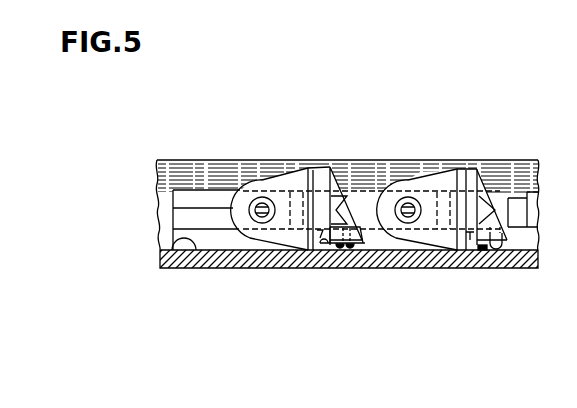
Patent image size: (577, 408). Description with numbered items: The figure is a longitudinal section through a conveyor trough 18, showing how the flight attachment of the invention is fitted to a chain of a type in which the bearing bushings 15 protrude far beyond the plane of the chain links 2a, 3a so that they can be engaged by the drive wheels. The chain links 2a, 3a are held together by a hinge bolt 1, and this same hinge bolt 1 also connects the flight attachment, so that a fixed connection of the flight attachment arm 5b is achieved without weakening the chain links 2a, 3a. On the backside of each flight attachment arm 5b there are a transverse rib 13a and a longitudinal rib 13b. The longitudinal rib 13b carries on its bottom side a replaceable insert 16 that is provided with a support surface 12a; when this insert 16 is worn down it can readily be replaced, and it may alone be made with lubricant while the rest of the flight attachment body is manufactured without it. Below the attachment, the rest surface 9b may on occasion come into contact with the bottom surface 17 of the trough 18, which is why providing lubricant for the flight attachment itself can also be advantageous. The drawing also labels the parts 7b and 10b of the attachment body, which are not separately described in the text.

The hinge bolt 1 is at (258, 223).
The chain link 2a is at (400, 176).
The chain link 3a is at (208, 196).
The flight attachment arm 5b is at (330, 168).
The first slider body 7b is at (284, 185).
The rest surface 9b is at (340, 248).
The engaging projection 10b is at (289, 258).
The support surface 12a is at (355, 245).
The transverse rib 13a is at (486, 228).
The longitudinal rib 13b is at (334, 172).
The bearing bushing 15 is at (264, 196).
The replaceable insert 16 is at (503, 246).
The bottom surface 17 is at (185, 245).
The trough 18 is at (162, 215).